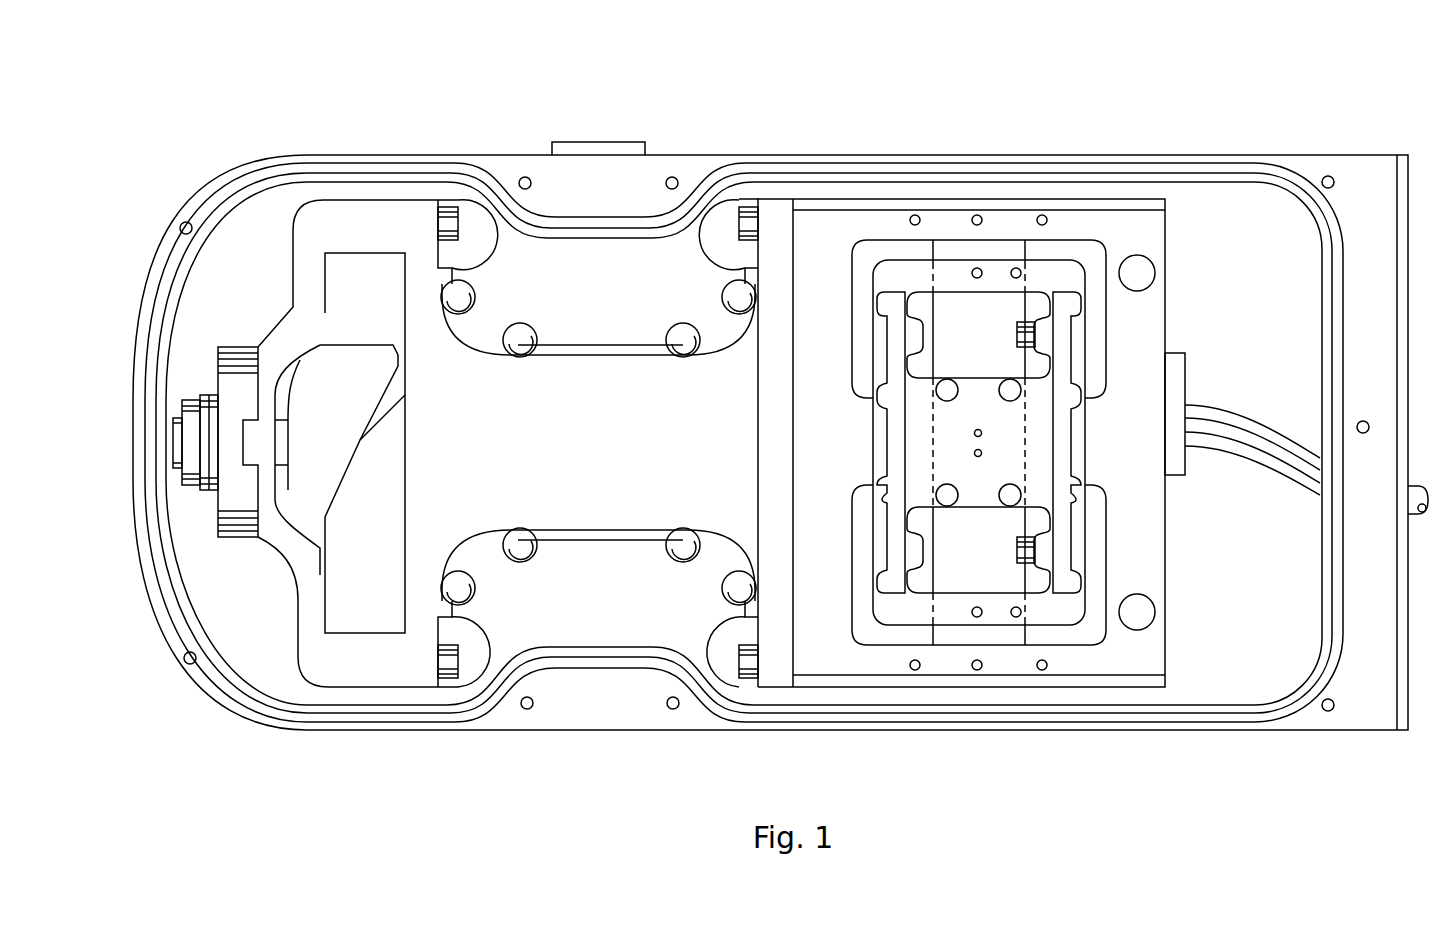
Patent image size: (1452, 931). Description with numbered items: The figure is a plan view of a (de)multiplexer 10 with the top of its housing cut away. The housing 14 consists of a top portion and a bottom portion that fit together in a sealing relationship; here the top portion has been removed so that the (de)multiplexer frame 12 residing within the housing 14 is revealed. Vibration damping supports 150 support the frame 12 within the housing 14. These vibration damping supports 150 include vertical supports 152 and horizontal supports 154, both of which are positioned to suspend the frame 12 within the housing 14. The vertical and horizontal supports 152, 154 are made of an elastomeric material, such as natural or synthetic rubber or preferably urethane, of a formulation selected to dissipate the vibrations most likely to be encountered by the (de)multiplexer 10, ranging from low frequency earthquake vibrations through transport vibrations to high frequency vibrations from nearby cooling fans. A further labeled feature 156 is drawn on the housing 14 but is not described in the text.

The (de)multiplexer 10 is at (780, 405).
The (de)multiplexer frame 12 is at (558, 287).
The housing 14 is at (1360, 720).
The vibration damping supports 150 is at (703, 597).
The vertical supports 152 is at (736, 602).
The horizontal supports 154 is at (1143, 268).
The gasket 156 is at (1077, 162).